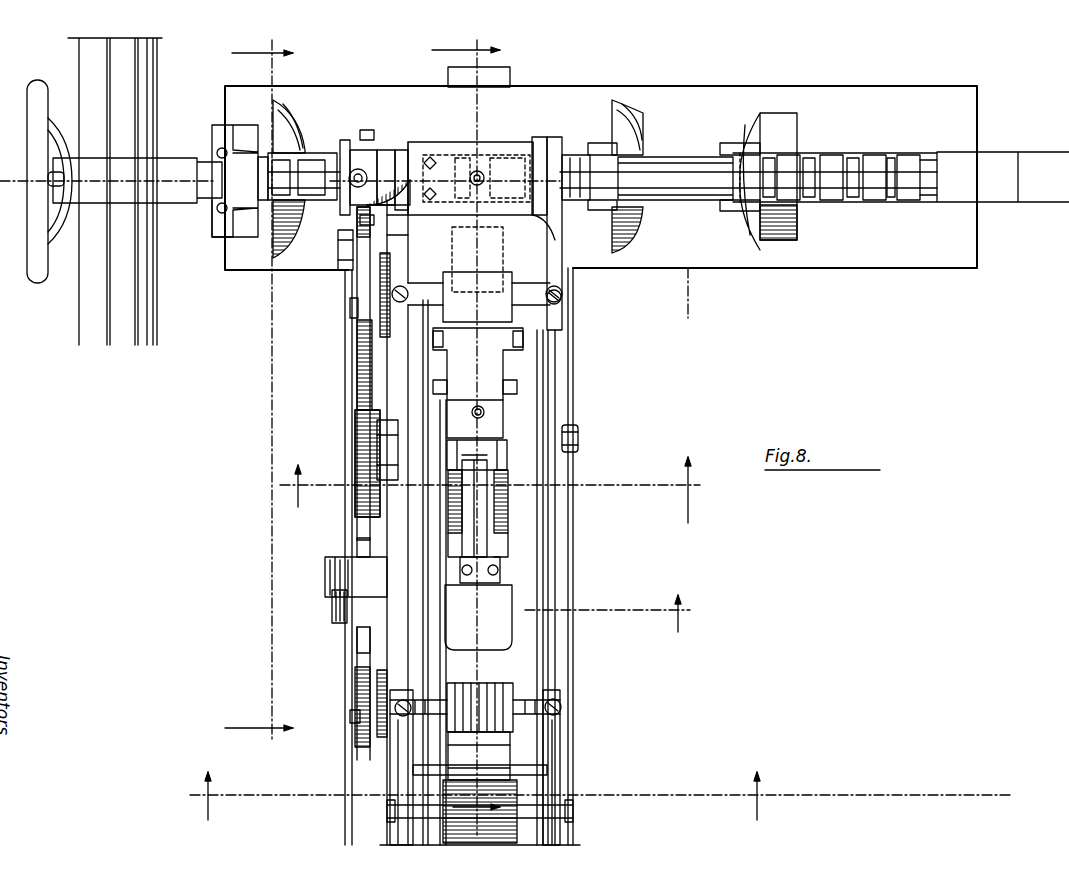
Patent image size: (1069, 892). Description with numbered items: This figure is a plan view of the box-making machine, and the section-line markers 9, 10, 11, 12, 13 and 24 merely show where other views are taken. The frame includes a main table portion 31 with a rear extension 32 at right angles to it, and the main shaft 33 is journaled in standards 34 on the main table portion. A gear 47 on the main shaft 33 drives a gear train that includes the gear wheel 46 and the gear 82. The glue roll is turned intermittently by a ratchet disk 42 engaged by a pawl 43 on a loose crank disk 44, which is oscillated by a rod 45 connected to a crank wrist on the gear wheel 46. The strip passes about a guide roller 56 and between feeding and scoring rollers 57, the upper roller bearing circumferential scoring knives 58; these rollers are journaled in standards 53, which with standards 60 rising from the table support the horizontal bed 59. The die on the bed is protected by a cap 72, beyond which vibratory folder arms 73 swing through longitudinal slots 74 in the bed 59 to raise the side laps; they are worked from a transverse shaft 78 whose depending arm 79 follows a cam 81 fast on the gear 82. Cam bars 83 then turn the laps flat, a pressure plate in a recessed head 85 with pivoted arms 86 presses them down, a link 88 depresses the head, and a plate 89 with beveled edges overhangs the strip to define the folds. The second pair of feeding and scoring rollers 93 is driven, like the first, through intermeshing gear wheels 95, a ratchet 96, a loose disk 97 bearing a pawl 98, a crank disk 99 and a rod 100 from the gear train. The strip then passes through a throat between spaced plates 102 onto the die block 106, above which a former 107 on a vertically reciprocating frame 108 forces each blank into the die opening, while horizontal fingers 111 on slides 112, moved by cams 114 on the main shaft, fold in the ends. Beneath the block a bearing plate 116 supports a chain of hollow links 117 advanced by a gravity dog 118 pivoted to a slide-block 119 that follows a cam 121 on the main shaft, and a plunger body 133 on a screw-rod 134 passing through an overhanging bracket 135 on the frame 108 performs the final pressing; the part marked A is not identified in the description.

The section line 9- 9 is at (251, 391).
The section line 10- 10 is at (477, 791).
The section line 11- 11 is at (470, 431).
The section line 12- 12 is at (685, 332).
The section line 13- 13 is at (398, 625).
The section line 24- 24 is at (496, 484).
The main table portion 31 is at (953, 264).
The rear extension 32 is at (572, 416).
The main shaft 33 is at (203, 153).
The standards 34 is at (220, 233).
The ratchet disk 42 is at (367, 661).
The pawl 43 is at (350, 557).
The crank disk 44 is at (357, 640).
The rod 45 is at (345, 410).
The gear wheel 46 is at (367, 378).
The gear 47 is at (358, 127).
The standards 53 is at (563, 725).
The guide roller 56 is at (527, 830).
The feeding and scoring rollers 57 is at (505, 698).
The scoring knives 58 is at (507, 682).
The horizontal bed 59 is at (553, 538).
The standards 60 is at (552, 137).
The cap 72 is at (478, 603).
The vibratory folder arms 73 is at (507, 510).
The longitudinal slots 74 is at (473, 473).
The transverse shaft 78 is at (390, 437).
The depending arm 79 is at (390, 427).
The cam 81 is at (373, 513).
The gear 82 is at (360, 457).
The cam bars 83 is at (452, 457).
The recessed head 85 is at (475, 401).
The forwardly extending arms 86 is at (500, 363).
The link 88 is at (441, 388).
The plate 89 is at (507, 460).
The feeding and scoring rollers 93 is at (505, 245).
The gear wheels 95 is at (378, 282).
The ratchet 96 is at (352, 318).
The disk 97 is at (365, 248).
The pawl 98 is at (380, 300).
The crank disk 99 is at (352, 287).
The rod 100 is at (350, 268).
The spaced plates 102 is at (477, 274).
The die block 106 is at (522, 228).
The former 107 is at (487, 152).
The vertically-reciprocating frame 108 is at (515, 142).
The horizontal fingers 111 is at (325, 225).
The slides 112 is at (325, 147).
The cams 114 is at (288, 108).
The bearing plate 116 is at (1001, 152).
The chain of hollow links 117 is at (255, 228).
The gravity dog 118 is at (673, 167).
The slide-block 119 is at (722, 210).
The cam 121 is at (793, 113).
The plunger body 133 is at (373, 182).
The screw-rod 134 is at (358, 193).
The overhanging bracket 135 is at (392, 178).
The work piece / roller A is at (508, 69).